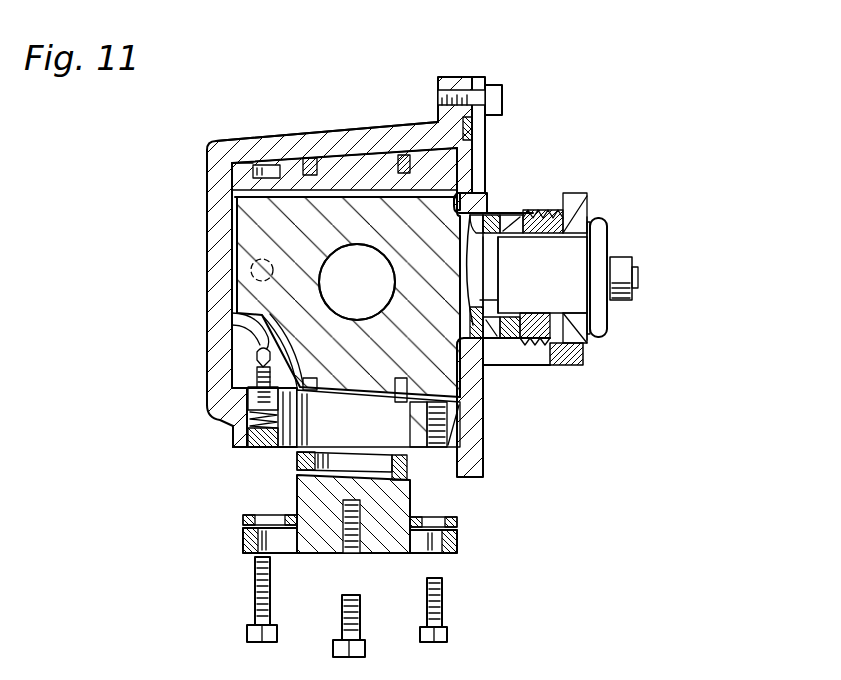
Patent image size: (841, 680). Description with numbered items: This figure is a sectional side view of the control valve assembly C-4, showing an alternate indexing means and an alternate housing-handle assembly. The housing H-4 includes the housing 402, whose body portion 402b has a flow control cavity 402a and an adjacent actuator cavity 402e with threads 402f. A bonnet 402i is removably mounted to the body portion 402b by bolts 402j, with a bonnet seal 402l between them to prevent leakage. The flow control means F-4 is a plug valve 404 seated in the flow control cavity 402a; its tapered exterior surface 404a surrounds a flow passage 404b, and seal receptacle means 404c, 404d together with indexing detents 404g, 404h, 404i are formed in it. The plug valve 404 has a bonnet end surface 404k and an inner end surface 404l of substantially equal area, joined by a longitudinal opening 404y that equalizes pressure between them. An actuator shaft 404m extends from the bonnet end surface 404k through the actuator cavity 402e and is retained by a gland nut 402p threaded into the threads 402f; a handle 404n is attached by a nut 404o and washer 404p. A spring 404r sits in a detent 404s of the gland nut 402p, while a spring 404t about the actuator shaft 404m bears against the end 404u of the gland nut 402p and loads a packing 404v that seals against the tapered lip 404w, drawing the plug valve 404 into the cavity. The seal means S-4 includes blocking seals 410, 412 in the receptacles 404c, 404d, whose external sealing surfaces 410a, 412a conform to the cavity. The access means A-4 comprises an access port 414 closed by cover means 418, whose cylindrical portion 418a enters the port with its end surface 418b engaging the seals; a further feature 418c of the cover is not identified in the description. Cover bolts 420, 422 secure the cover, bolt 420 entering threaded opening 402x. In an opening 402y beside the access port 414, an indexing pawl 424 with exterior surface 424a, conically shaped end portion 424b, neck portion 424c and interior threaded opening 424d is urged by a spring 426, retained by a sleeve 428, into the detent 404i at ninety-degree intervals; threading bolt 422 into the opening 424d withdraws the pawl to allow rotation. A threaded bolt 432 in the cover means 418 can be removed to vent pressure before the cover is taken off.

The housing 402 is at (207, 168).
The flow control cavity 402a is at (393, 130).
The body portion 402b is at (222, 280).
The actuator cavity 402e is at (466, 216).
The threads 402f is at (535, 212).
The bonnet 402i is at (480, 130).
The bolt 402j is at (502, 92).
The bonnet seal 402l is at (470, 150).
The gland nut 402p is at (575, 365).
The threaded opening 402x is at (458, 448).
The opening 402y is at (270, 458).
The plug valve 404 is at (248, 225).
The exterior surface 404a is at (373, 127).
The flow passage 404b is at (323, 304).
The seal receptacle means 404c is at (327, 130).
The seal receptacle means 404d is at (300, 374).
The indexing detent 404g is at (267, 130).
The indexing detent 404h is at (250, 264).
The indexing detent 404i is at (258, 380).
The bonnet end surface 404k is at (455, 385).
The inner end surface 404l is at (232, 235).
The actuator shaft 404m is at (528, 348).
The handle 404n is at (600, 230).
The nut 404o is at (638, 272).
The washer 404p is at (615, 262).
The spring 404r is at (573, 215).
The detent 404s is at (522, 266).
The spring 404t is at (498, 307).
The end 404u is at (500, 300).
The packing 404v is at (490, 330).
The tapered lip 404w is at (495, 260).
The longitudinal opening 404y is at (245, 160).
The blocking seal 410 is at (312, 130).
The external sealing surface 410a is at (410, 128).
The blocking seal 412 is at (407, 492).
The external sealing surface 412a is at (300, 490).
The access port 414 is at (315, 400).
The cover means 418 is at (243, 540).
The cylindrical portion 418a is at (395, 505).
The end surface 418b is at (380, 480).
The threaded bore 418c is at (350, 552).
The cover bolt 420 is at (442, 615).
The cover bolt 422 is at (255, 583).
The indexing pawl 424 is at (266, 352).
The exterior surface 424a is at (255, 425).
The conically shaped end portion 424b is at (265, 365).
The neck portion 424c is at (255, 395).
The interior threaded opening 424d is at (255, 410).
The spring 426 is at (262, 444).
The sleeve 428 is at (268, 452).
The threaded bolt 432 is at (343, 606).
The control valve assembly C-4 is at (253, 64).
The housing H-4 is at (207, 142).
The flow control means F-4 is at (243, 207).
The access means A-4 is at (240, 530).
The seal means S-4 is at (413, 470).